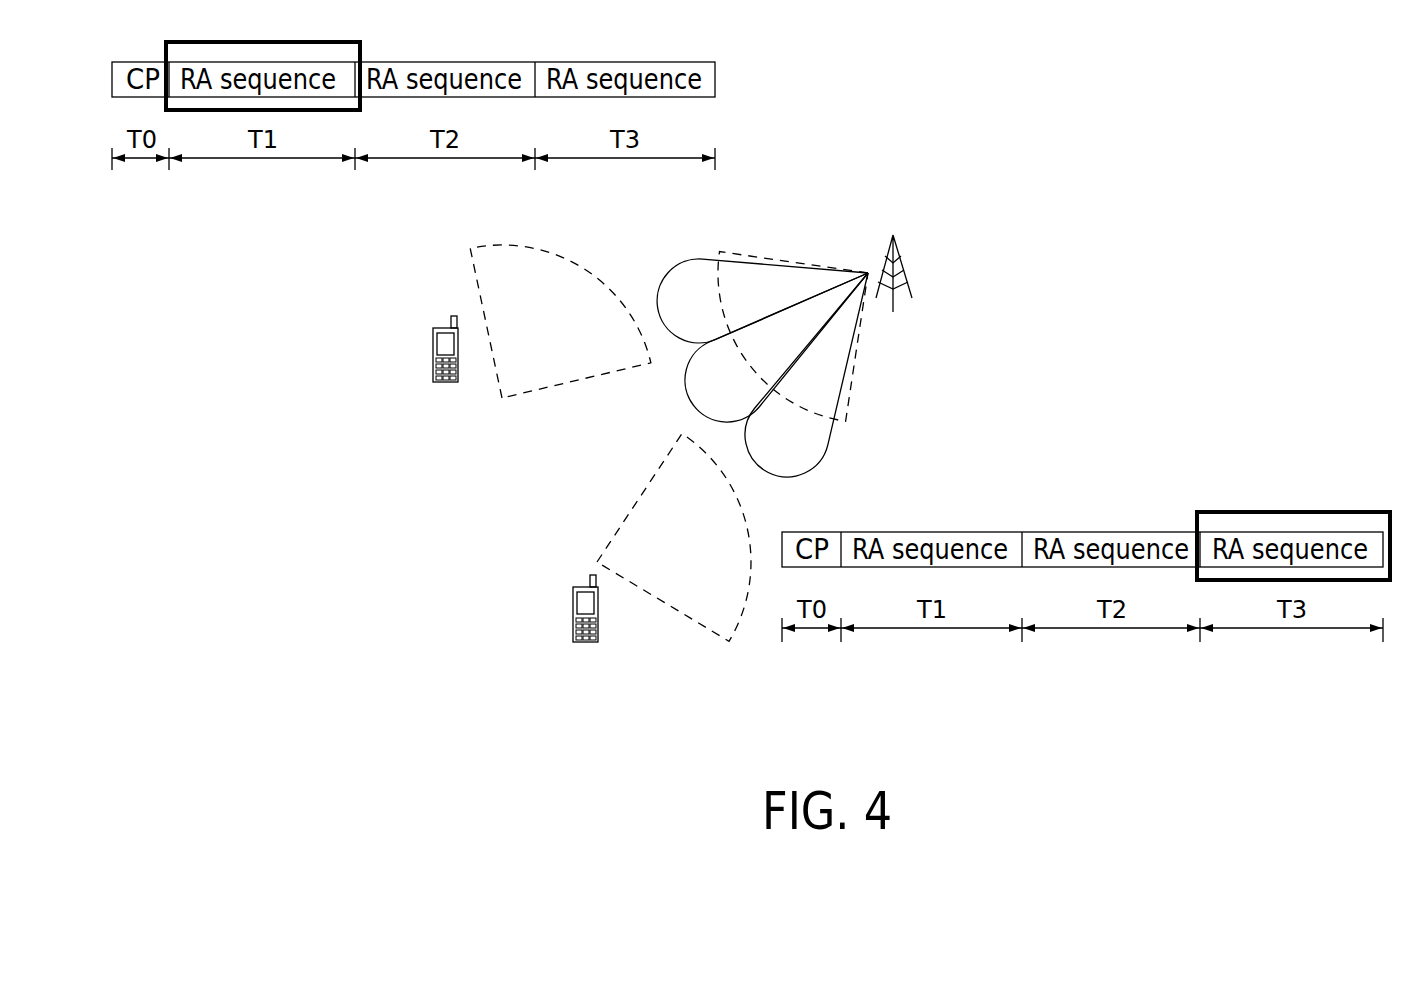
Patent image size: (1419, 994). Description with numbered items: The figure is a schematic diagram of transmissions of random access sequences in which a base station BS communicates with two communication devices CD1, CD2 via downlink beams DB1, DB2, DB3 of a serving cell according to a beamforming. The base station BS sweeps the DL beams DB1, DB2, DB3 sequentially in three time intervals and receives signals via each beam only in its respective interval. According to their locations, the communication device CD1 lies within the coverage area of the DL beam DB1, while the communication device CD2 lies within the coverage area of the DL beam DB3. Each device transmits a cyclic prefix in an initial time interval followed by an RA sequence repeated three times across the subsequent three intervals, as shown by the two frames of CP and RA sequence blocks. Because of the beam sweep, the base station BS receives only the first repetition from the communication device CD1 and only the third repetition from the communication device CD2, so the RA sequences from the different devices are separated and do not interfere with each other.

The base station BS is at (908, 255).
The DL beam DB1 is at (762, 301).
The DL beam DB2 is at (776, 347).
The DL beam DB3 is at (806, 375).
The communication device CD1 is at (440, 390).
The communication device CD2 is at (578, 648).